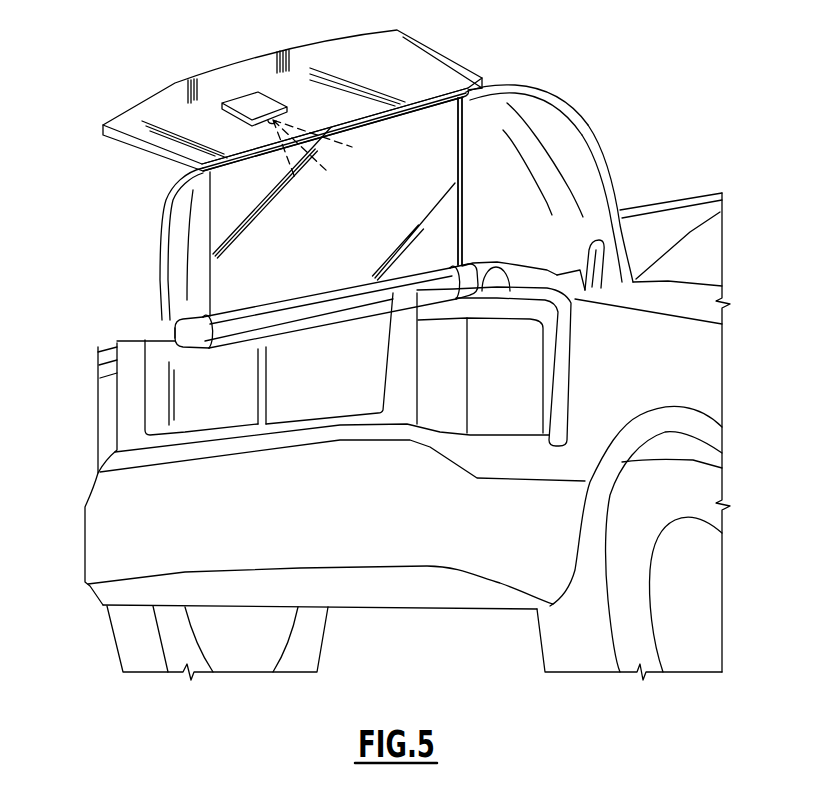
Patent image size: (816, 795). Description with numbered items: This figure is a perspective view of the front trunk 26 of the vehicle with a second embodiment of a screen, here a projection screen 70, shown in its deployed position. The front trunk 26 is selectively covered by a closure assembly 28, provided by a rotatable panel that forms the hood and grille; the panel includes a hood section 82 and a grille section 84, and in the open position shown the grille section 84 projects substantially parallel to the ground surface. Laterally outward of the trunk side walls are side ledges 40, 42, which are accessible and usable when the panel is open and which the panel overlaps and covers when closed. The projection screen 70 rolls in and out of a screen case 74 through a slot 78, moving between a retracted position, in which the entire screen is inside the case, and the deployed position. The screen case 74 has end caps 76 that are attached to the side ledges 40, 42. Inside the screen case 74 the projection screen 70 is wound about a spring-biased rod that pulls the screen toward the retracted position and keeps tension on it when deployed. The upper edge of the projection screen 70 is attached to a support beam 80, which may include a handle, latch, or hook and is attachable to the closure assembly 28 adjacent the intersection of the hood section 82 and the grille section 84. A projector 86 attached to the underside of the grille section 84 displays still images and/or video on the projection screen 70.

The front trunk 26 is at (149, 307).
The closure assembly 28 is at (611, 134).
The side ledge 40 is at (120, 336).
The side ledge 42 is at (553, 278).
The projection screen 70 is at (435, 188).
The screen case 74 is at (233, 334).
The end caps 76 is at (187, 330).
The slot 78 is at (256, 295).
The support beam 80 is at (427, 107).
The hood section 82 is at (609, 178).
The grille section 84 is at (133, 152).
The projector 86 is at (294, 92).